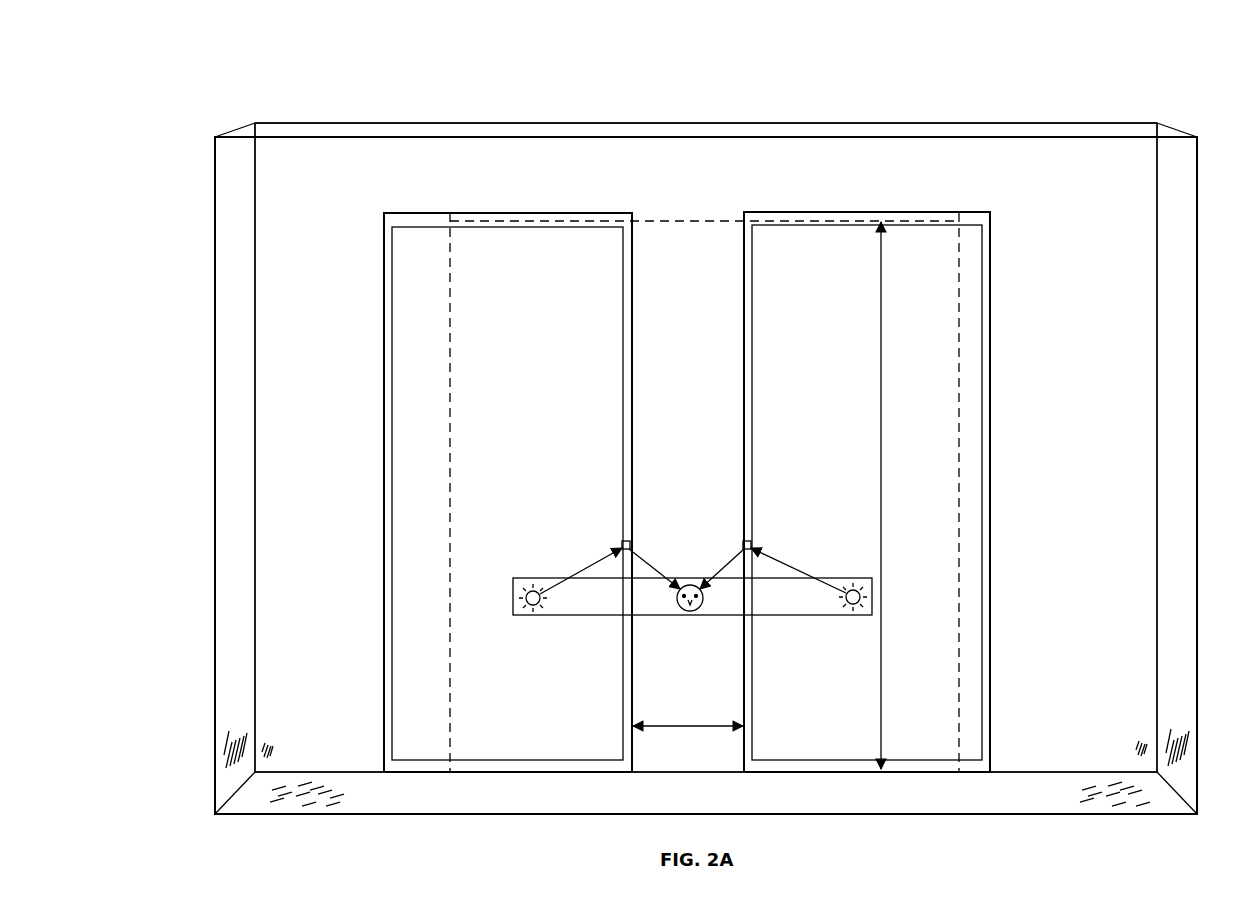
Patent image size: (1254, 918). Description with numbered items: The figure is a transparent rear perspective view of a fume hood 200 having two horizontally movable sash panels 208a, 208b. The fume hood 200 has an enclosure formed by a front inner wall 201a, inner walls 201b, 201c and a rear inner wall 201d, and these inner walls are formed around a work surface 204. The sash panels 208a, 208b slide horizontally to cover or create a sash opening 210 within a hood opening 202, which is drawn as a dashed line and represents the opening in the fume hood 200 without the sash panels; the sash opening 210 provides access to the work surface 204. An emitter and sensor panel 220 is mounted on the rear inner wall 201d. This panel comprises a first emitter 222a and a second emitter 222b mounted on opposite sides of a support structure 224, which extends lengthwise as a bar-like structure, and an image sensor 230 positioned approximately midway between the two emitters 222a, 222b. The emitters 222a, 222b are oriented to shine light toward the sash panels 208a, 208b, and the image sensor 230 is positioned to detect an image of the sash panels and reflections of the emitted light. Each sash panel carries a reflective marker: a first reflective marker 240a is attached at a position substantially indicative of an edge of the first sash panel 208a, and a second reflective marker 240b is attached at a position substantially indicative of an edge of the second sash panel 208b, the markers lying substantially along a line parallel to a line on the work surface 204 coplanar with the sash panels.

The fume hood 200 is at (758, 128).
The front inner wall 201a is at (660, 173).
The inner wall 201b is at (235, 213).
The side inner wall 201c is at (1182, 182).
The rear inner wall 201d is at (332, 140).
The work surface 204 is at (714, 805).
The first sash panel 208a is at (430, 213).
The second sash panel 208b is at (790, 215).
The hood opening 202 is at (655, 221).
The sash opening 210 is at (704, 416).
The emitter and sensor panel 220 is at (822, 570).
The first emitter 222a is at (531, 588).
The second emitter 222b is at (858, 588).
The support structure 224 is at (804, 606).
The image sensor 230 is at (692, 614).
The first reflective marker 240a is at (625, 541).
The second reflective marker 240b is at (750, 541).